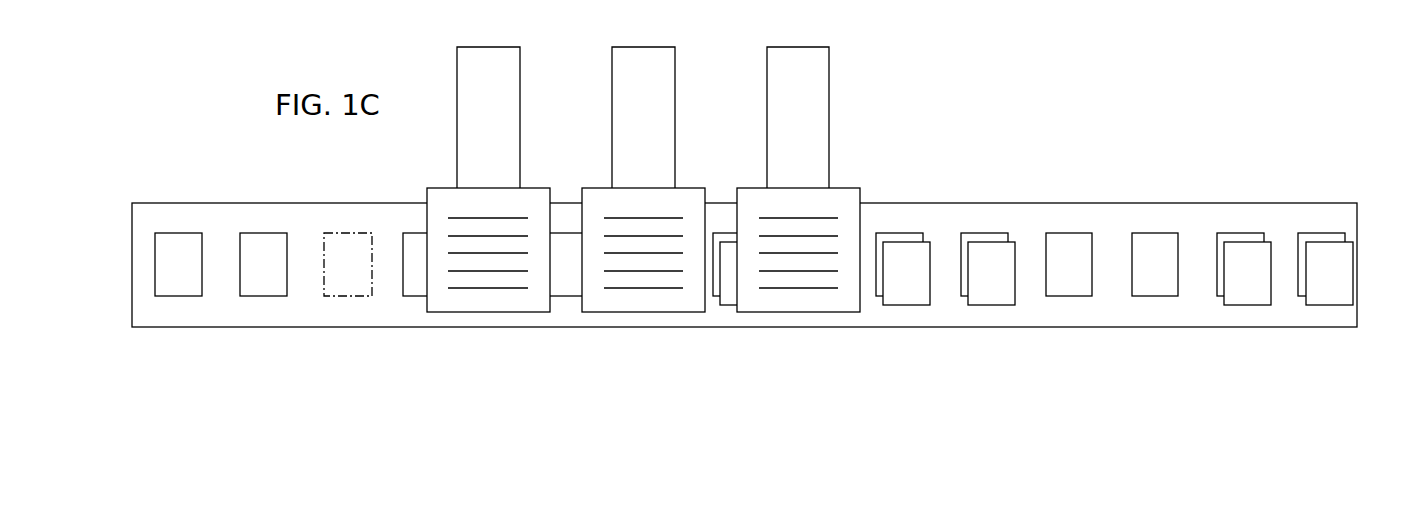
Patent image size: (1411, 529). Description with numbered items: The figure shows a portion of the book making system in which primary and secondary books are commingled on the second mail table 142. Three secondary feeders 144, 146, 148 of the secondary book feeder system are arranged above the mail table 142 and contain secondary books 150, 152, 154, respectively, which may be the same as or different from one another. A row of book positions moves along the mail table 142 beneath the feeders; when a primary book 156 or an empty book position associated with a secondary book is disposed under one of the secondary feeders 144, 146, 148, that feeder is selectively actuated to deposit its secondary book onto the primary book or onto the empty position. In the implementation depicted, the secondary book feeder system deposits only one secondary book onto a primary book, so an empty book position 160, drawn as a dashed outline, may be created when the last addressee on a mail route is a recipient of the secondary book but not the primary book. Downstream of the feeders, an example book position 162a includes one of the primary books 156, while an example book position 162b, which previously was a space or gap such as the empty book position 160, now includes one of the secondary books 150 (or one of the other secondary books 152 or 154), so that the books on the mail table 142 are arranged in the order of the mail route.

The second mail table 142 is at (999, 203).
The secondary feeder 144 is at (775, 207).
The secondary feeder 146 is at (630, 207).
The secondary feeder 148 is at (785, 207).
The secondary book 150 is at (459, 218).
The secondary book 152 is at (613, 218).
The secondary book 154 is at (772, 218).
The primary book 156 is at (1186, 264).
The empty book position 160 is at (353, 232).
The book position 162a is at (1153, 296).
The book position 162b is at (1073, 296).